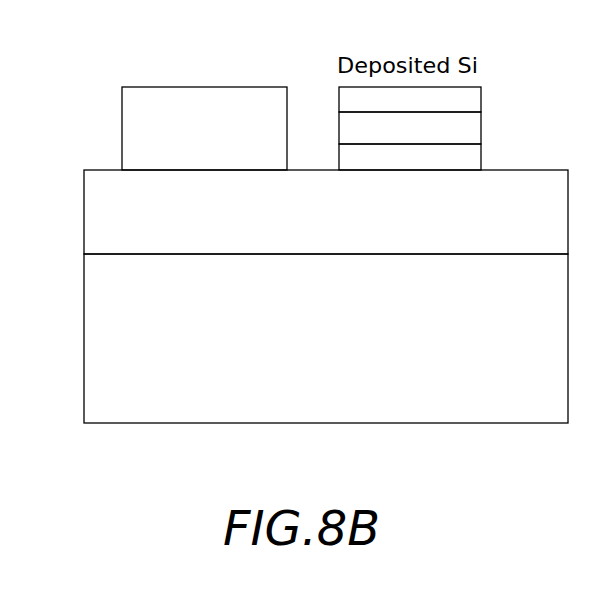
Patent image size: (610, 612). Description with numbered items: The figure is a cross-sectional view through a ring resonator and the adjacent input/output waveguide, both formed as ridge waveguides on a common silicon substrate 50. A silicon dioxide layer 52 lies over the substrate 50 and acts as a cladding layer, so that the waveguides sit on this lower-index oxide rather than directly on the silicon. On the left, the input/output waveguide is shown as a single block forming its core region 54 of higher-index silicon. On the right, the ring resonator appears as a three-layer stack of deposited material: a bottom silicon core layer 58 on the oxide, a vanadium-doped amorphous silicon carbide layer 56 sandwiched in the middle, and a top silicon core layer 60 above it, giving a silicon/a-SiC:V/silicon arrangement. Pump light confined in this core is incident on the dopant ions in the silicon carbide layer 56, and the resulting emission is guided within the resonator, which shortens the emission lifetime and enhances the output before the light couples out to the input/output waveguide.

The substrate 50 is at (122, 368).
The silicon dioxide layer 52 is at (122, 225).
The core region 54 is at (159, 110).
The ion doped amorphous silicon carbide layer 56 is at (470, 127).
The bottom core layer 58 is at (470, 158).
The top core layer 60 is at (470, 97).